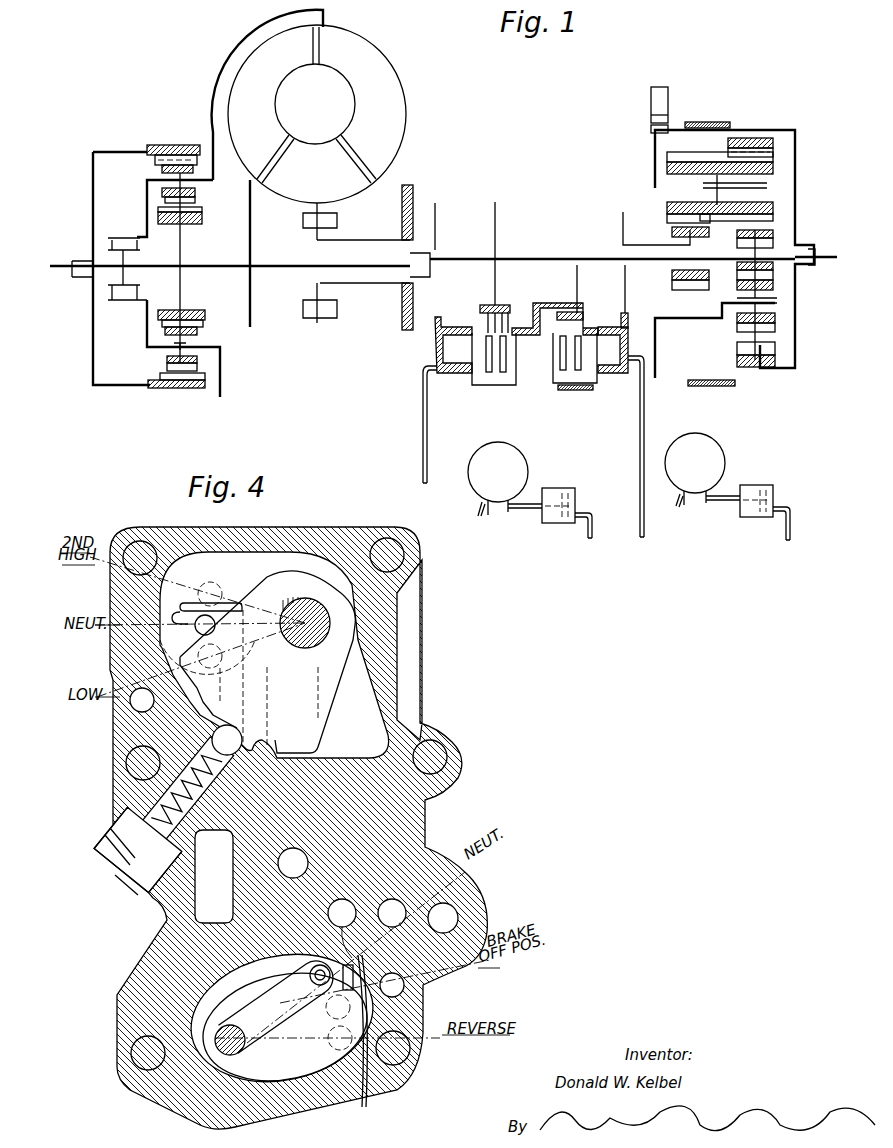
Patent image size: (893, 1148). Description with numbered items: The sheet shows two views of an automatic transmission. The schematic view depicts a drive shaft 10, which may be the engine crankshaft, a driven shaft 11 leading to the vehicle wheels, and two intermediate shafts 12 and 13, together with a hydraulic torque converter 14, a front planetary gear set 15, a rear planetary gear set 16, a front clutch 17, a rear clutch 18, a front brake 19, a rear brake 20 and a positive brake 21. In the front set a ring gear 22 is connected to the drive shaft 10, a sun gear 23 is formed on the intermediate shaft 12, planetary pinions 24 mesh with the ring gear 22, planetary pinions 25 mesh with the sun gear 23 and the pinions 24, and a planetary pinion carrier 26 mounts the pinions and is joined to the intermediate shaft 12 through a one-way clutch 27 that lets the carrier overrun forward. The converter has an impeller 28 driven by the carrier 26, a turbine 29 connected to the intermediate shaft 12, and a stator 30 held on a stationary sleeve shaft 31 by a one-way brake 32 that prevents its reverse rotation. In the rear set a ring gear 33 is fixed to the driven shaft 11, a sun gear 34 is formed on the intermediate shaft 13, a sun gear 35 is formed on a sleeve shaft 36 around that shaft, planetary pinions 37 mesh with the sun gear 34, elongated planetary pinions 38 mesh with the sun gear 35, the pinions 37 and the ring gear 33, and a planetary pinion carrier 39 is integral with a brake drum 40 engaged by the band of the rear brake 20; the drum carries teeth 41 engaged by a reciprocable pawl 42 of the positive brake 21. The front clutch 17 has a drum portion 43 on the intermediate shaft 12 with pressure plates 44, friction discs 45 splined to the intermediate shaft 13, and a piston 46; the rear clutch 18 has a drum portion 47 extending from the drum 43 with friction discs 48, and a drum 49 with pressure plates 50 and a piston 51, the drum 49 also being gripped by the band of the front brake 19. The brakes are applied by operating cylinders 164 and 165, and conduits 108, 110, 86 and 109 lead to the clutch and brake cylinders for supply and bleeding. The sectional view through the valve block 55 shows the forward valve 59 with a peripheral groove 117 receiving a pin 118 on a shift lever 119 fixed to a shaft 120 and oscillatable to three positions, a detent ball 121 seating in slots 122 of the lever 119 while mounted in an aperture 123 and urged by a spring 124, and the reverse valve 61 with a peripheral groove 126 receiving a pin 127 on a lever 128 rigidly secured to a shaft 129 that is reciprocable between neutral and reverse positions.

In FIG. 1, the drive shaft 10 is at (63, 268).
In FIG. 1, the driven shaft 11 is at (830, 256).
In FIG. 1, the intermediate shaft 12 is at (292, 263).
In FIG. 1, the intermediate shaft 13 is at (540, 258).
In FIG. 1, the hydraulic torque converter 14 is at (328, 106).
In FIG. 1, the front planetary gear set 15 is at (172, 143).
In FIG. 1, the rear planetary gear set 16 is at (768, 128).
In FIG. 1, the front clutch 17 is at (465, 392).
In FIG. 1, the rear clutch 18 is at (604, 382).
In FIG. 1, the front brake 19 is at (530, 455).
In FIG. 1, the rear brake 20 is at (719, 390).
In FIG. 1, the positive brake 21 is at (660, 86).
In FIG. 1, the ring gear 22 is at (155, 160).
In FIG. 1, the sun gear 23 is at (202, 216).
In FIG. 1, the planetary pinions 24 is at (196, 195).
In FIG. 1, the planetary pinions 25 is at (160, 363).
In FIG. 1, the planetary pinion carrier 26 is at (147, 197).
In FIG. 1, the one-way clutch 27 is at (138, 250).
In FIG. 1, the impeller 28 is at (359, 137).
In FIG. 1, the turbine 29 is at (267, 135).
In FIG. 1, the stator 30 is at (311, 156).
In FIG. 1, the stationary sleeve shaft 31 is at (366, 240).
In FIG. 1, the one-way brake 32 is at (300, 218).
In FIG. 1, the ring gear 33 is at (775, 153).
In FIG. 1, the sun gear 34 is at (775, 264).
In FIG. 1, the sun gear 35 is at (672, 278).
In FIG. 1, the sleeve shaft 36 is at (647, 238).
In FIG. 1, the planetary pinions 37 is at (737, 328).
In FIG. 1, the elongated planetary pinions 38 is at (667, 217).
In FIG. 1, the planetary pinion carrier 39 is at (655, 153).
In FIG. 1, the brake drum 40 is at (734, 122).
In FIG. 1, the teeth 41 is at (651, 128).
In FIG. 1, the pawl 42 is at (651, 105).
In FIG. 1, the drum portion 43 is at (498, 385).
In FIG. 1, the pressure plates 44 is at (482, 325).
In FIG. 1, the friction discs 45 is at (510, 316).
In FIG. 1, the piston 46 is at (440, 356).
In FIG. 1, the drum portion 47 is at (545, 305).
In FIG. 1, the friction discs 48 is at (571, 313).
In FIG. 1, the drum 49 is at (552, 385).
In FIG. 1, the pressure plates 50 is at (582, 320).
In FIG. 1, the piston 51 is at (626, 328).
In FIG. 1, the conduit 86 is at (590, 545).
In FIG. 1, the conduit 108 is at (424, 489).
In FIG. 1, the conduit 109 is at (788, 546).
In FIG. 1, the conduit 110 is at (642, 543).
In FIG. 1, the operating cylinder 164 is at (570, 490).
In FIG. 1, the operating cylinder 165 is at (765, 485).
In FIG. 4, the valve body 55 is at (425, 660).
In FIG. 4, the forward valve 59 is at (235, 600).
In FIG. 4, the reverse valve 61 is at (357, 1036).
In FIG. 4, the peripheral groove 117 is at (208, 600).
In FIG. 4, the pin 118 is at (214, 630).
In FIG. 4, the shift lever 119 is at (332, 686).
In FIG. 4, the shaft 120 is at (331, 637).
In FIG. 4, the ball 121 is at (229, 758).
In FIG. 4, the slots 122 is at (234, 733).
In FIG. 4, the aperture 123 is at (168, 800).
In FIG. 4, the spring 124 is at (162, 815).
In FIG. 4, the peripheral groove 126 is at (340, 931).
In FIG. 4, the pin 127 is at (310, 980).
In FIG. 4, the lever 128 is at (290, 1048).
In FIG. 4, the shaft 129 is at (240, 1054).